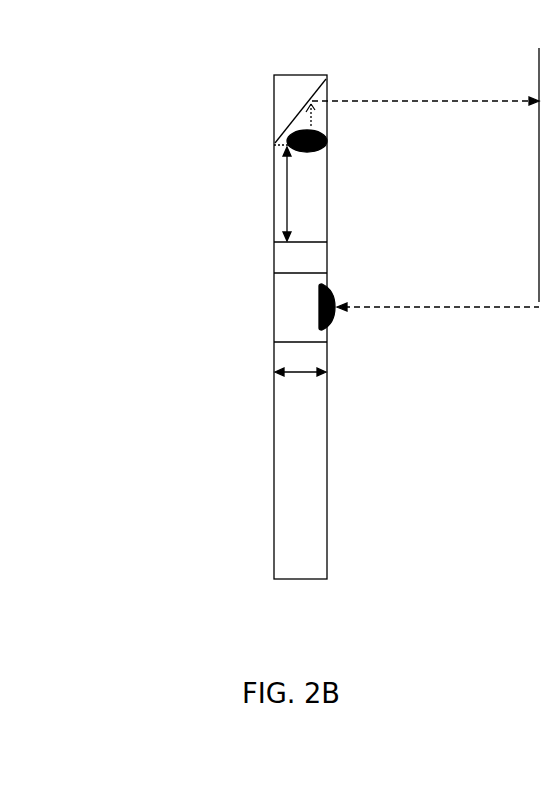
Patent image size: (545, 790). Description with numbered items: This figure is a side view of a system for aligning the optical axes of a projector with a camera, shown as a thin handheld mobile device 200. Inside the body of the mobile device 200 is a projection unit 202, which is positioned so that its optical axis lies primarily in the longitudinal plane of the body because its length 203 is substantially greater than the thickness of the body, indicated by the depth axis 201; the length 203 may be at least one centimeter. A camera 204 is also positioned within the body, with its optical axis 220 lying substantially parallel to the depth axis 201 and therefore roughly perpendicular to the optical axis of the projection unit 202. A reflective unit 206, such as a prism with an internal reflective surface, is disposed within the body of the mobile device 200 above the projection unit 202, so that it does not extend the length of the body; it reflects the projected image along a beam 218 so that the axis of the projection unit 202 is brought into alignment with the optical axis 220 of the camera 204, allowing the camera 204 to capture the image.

The mobile device 200 is at (275, 505).
The depth axis 201 is at (300, 380).
The projection unit 202 is at (318, 152).
The length of projection unit 203 is at (283, 195).
The camera 204 is at (332, 330).
The reflective unit 206 is at (294, 117).
The beam 218 is at (496, 99).
The optical axis of camera 220 is at (512, 305).